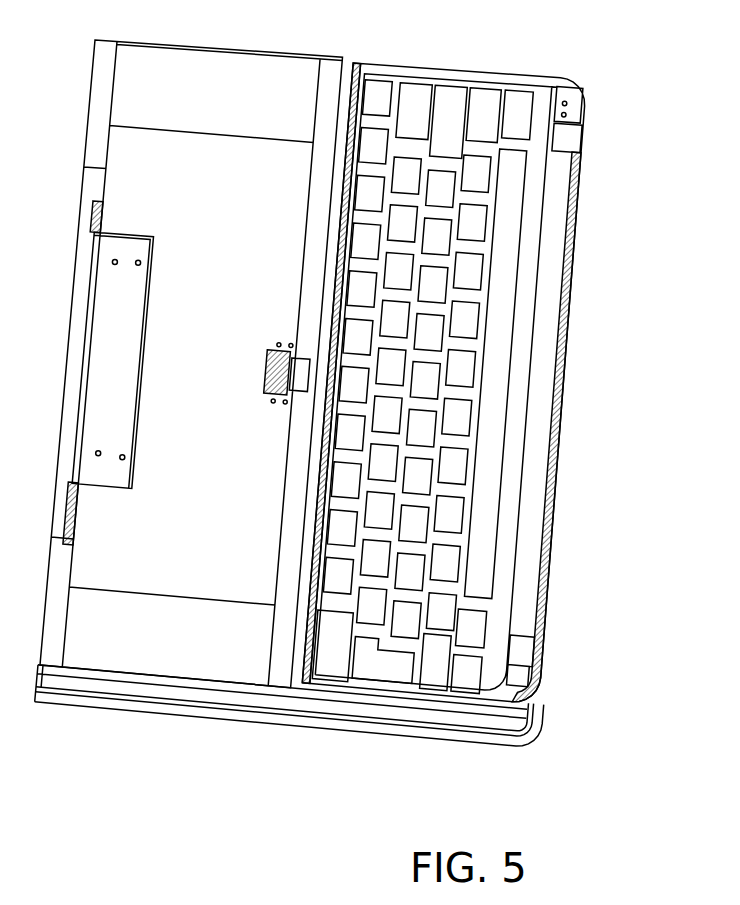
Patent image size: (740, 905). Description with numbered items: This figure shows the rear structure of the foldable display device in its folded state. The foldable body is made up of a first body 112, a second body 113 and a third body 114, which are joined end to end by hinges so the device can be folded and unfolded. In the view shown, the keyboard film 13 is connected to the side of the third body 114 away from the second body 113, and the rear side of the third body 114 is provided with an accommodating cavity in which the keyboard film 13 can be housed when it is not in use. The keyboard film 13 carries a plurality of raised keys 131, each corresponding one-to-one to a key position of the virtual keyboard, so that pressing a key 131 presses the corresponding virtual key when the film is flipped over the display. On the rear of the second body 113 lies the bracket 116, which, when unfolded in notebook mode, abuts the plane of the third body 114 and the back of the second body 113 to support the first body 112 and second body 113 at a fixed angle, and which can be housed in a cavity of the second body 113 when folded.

The keyboard film 13 is at (530, 253).
The raised keys 131 is at (460, 372).
The bracket 116 is at (207, 155).
The second body 113 is at (130, 687).
The third body 114 is at (403, 713).
The first body 112 is at (320, 723).